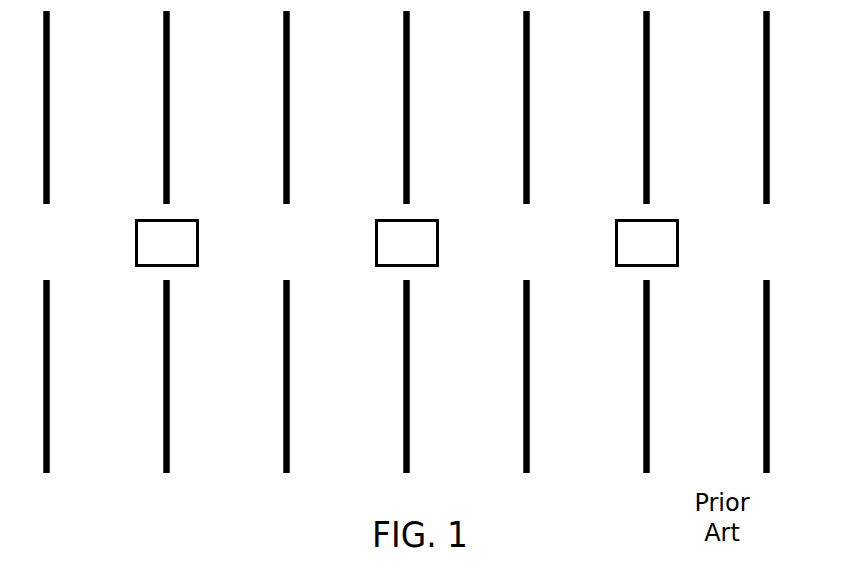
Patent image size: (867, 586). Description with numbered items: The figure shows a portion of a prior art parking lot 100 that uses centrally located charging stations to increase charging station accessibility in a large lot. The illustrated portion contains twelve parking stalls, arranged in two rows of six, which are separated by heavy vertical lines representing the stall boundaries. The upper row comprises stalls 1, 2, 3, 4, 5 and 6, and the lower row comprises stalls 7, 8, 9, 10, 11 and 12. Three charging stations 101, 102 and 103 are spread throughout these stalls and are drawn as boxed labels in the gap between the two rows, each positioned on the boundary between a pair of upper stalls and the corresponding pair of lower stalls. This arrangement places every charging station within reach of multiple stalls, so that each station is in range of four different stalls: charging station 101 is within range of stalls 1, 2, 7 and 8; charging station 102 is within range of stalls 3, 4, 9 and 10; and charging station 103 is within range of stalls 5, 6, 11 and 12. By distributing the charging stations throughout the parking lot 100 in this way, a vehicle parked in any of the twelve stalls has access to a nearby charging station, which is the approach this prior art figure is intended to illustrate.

The parking stall 1 is at (95, 48).
The parking stall 2 is at (218, 48).
The parking stall 3 is at (338, 48).
The parking stall 4 is at (458, 48).
The parking stall 5 is at (576, 48).
The parking stall 6 is at (700, 48).
The parking stall 7 is at (91, 455).
The parking stall 8 is at (216, 455).
The parking stall 9 is at (335, 455).
The parking stall 10 is at (448, 455).
The parking stall 11 is at (564, 455).
The parking stall 12 is at (688, 455).
The parking lot 100 is at (163, 506).
The charging station 101 is at (146, 252).
The charging station 102 is at (386, 252).
The charging station 103 is at (626, 252).